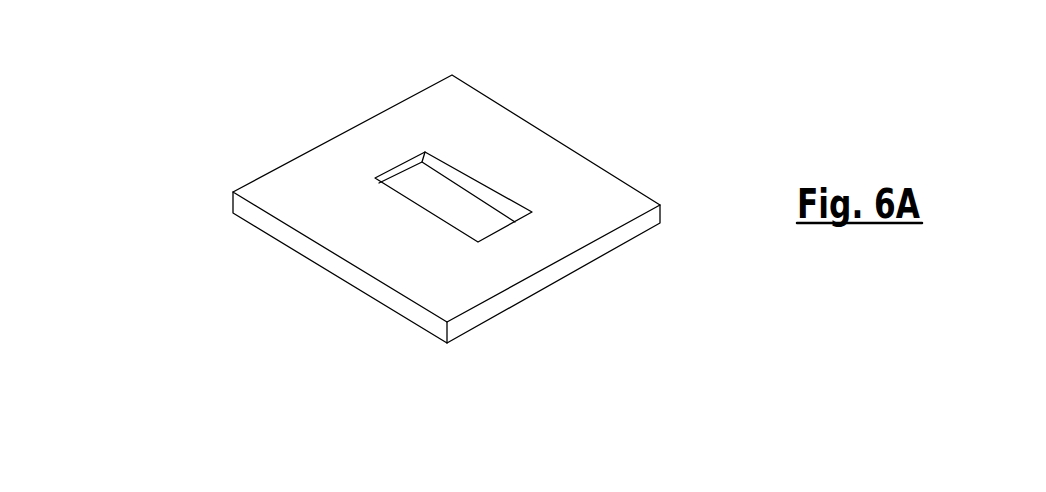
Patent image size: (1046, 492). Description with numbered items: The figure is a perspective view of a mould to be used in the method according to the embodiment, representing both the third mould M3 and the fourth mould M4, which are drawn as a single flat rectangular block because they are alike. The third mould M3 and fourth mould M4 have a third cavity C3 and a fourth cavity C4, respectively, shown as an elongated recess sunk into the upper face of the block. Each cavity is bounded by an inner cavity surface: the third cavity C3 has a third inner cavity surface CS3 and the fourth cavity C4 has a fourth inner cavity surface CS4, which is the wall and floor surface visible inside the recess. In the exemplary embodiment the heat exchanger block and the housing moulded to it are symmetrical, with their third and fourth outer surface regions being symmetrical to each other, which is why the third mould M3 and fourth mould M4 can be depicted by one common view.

The third mould M3 is at (336, 226).
The fourth mould M4 is at (280, 270).
The third cavity C3 is at (545, 216).
The fourth cavity C4 is at (545, 216).
The third inner cavity surface CS3 is at (545, 216).
The fourth inner cavity surface CS4 is at (455, 207).